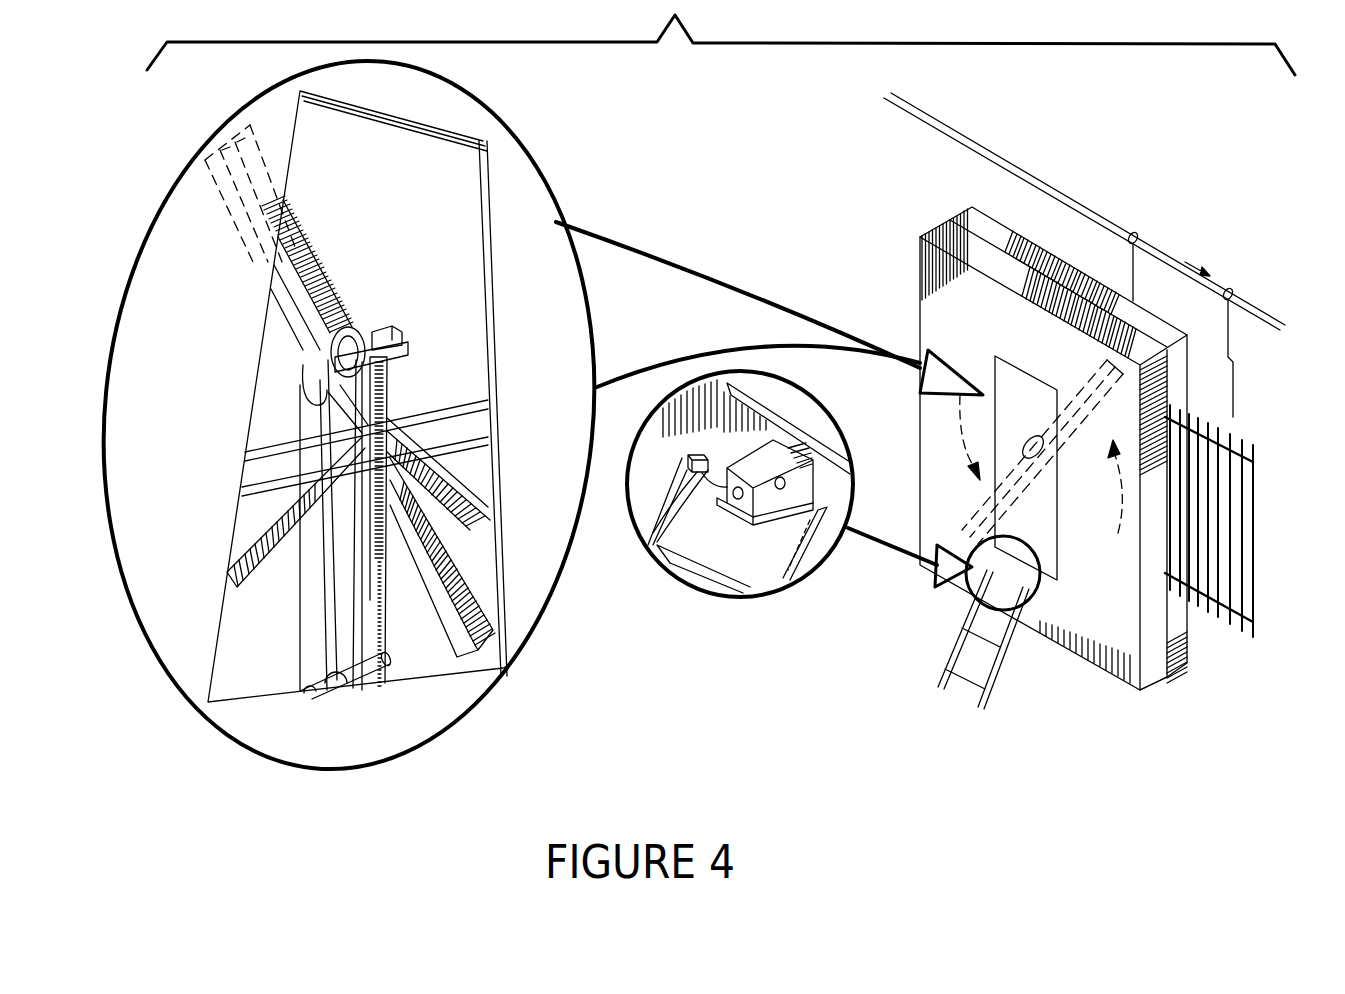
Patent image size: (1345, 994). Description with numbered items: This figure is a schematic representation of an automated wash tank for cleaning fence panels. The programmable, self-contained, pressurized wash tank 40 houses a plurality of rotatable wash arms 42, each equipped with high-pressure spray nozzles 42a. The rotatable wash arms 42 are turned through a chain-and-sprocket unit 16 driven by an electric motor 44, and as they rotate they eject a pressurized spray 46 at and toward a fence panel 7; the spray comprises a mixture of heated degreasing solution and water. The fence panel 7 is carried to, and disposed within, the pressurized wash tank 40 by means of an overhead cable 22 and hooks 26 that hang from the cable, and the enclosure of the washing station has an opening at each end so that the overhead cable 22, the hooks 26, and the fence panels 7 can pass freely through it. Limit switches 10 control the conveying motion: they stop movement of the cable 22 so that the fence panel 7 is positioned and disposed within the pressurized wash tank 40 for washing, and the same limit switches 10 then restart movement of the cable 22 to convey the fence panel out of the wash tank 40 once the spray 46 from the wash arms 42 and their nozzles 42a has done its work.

The fence panel 7 is at (1265, 498).
The limit switches 10 is at (892, 130).
The chain-and-sprocket unit 16 is at (307, 357).
The overhead cable 22 is at (1185, 270).
The hooks 26 is at (1230, 357).
The pressurized wash tank 40 is at (968, 338).
The rotatable wash arms 42 is at (310, 245).
The high-pressure spray nozzles 42a is at (255, 157).
The electric motor 44 is at (750, 507).
The pressurized spray 46 is at (552, 262).